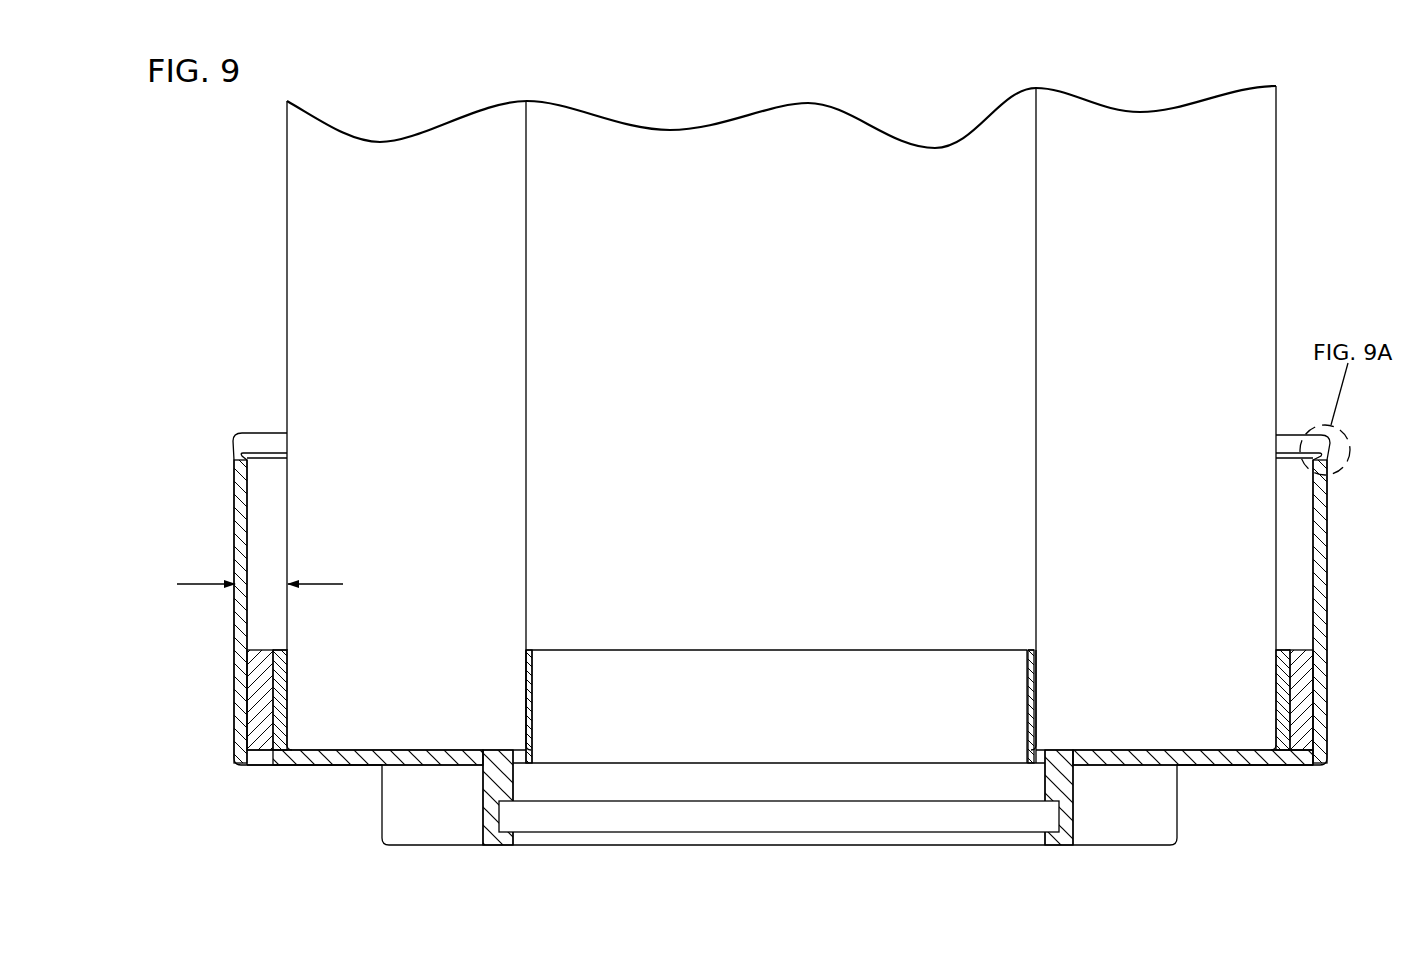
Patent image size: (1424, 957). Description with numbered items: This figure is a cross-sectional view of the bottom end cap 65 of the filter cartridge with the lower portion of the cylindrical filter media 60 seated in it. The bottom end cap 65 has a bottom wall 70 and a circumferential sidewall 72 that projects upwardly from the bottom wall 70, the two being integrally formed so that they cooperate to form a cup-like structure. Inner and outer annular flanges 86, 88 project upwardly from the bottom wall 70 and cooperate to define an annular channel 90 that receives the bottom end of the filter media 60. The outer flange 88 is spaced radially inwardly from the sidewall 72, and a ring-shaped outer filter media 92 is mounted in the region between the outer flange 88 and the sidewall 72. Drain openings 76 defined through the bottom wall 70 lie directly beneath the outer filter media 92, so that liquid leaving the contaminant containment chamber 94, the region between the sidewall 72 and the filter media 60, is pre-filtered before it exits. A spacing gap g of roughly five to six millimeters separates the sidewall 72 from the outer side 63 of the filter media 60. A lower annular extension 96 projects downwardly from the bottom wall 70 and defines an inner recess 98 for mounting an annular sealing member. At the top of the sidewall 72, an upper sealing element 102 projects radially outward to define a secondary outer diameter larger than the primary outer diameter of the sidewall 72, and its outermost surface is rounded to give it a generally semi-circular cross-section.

The filter media 60 is at (527, 228).
The outer side of the filter media 63 is at (287, 180).
The bottom end cap 65 is at (744, 626).
The bottom wall 70 is at (1217, 762).
The sidewall 72 is at (236, 620).
The drain openings 76 is at (259, 765).
The inner annular flange 86 is at (532, 705).
The outer annular flange 88 is at (287, 672).
The annular channel 90 is at (310, 750).
The outer filter media 92 is at (262, 713).
The contaminant containment chamber 94 is at (270, 490).
The lower annular extension 96 is at (483, 822).
The inner recess 98 is at (500, 807).
The upper sealing element 102 is at (232, 440).
The spacing gap g is at (260, 584).